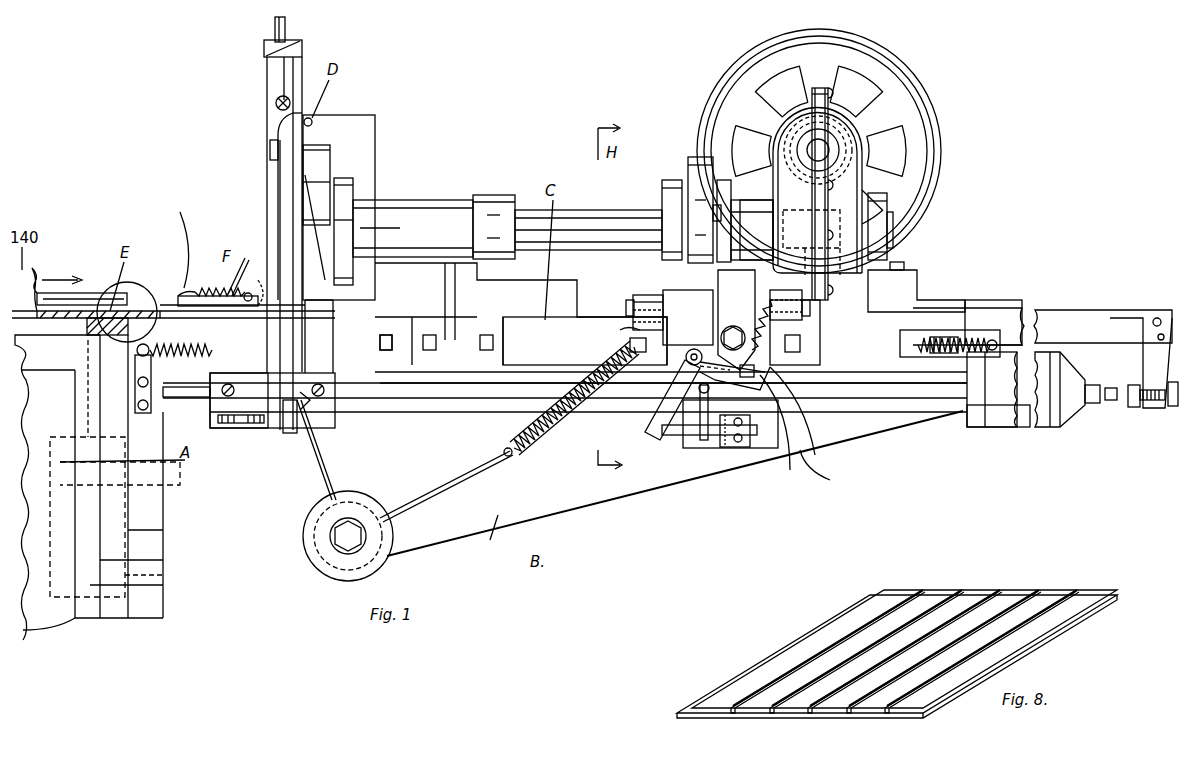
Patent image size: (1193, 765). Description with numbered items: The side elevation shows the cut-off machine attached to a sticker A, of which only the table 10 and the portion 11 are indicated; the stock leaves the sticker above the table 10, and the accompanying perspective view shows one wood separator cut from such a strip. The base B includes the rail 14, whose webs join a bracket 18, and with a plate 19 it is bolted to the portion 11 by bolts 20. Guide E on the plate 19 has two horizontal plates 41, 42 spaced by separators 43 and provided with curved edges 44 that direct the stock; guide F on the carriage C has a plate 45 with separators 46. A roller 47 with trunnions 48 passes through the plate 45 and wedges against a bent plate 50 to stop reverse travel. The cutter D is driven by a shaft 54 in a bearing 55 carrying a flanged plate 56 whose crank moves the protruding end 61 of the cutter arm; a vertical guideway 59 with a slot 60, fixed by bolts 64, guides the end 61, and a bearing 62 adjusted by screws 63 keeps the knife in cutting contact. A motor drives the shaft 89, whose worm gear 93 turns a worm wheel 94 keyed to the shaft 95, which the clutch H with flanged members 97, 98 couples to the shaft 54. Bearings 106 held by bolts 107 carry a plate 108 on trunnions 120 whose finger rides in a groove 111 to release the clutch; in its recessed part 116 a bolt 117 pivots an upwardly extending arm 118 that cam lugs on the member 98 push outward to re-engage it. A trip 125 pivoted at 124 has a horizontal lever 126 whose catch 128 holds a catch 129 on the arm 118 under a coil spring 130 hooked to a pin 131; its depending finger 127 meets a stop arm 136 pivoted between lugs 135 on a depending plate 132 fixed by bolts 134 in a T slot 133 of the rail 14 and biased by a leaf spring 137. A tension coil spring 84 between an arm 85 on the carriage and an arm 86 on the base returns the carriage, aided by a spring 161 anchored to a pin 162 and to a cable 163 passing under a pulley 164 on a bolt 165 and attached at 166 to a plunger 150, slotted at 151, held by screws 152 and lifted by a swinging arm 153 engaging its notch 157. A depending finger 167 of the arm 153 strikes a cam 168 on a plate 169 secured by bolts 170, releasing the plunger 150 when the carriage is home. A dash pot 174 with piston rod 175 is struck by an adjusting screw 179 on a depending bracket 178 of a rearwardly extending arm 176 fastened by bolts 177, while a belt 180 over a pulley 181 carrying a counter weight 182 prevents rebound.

The table 10 is at (66, 360).
The portion of sticker 11 is at (92, 583).
The rail 14 is at (903, 415).
The bracket 18 is at (155, 533).
The plate 19 is at (115, 563).
The bolts 20 is at (183, 480).
The horizontal plate 41 is at (62, 320).
The horizontal plate 42 is at (78, 292).
The separators 43 is at (138, 296).
The curved edges 44 is at (54, 282).
The plate 45 is at (229, 272).
The separators 46 is at (228, 318).
The roller 47 is at (320, 302).
The trunnions 48 is at (300, 478).
The bent plate 50 is at (312, 285).
The shaft 54 is at (598, 225).
The bearing 55 is at (490, 200).
The flanged plate 56 is at (435, 215).
The vertical guideway 59 is at (358, 125).
The vertical slot 60 is at (318, 268).
The protruding end of arm 61 is at (322, 160).
The bearing 62 is at (312, 280).
The adjusting screws 63 is at (393, 175).
The bolts 64 is at (380, 345).
The tension coil spring 84 is at (178, 360).
The arm 85 is at (990, 340).
The arm 86 is at (745, 72).
The shaft 89 is at (826, 151).
The worm gear 93 is at (838, 128).
The worm wheel 94 is at (838, 200).
The shaft 95 is at (890, 228).
The flanged member 97 is at (675, 210).
The flanged member 98 is at (724, 180).
The bearings 106 is at (665, 300).
The bolts 107 is at (622, 333).
The plate 108 is at (650, 262).
The groove 111 is at (697, 180).
The recessed part 116 is at (900, 280).
The bolt 117 is at (733, 290).
The upwardly extending arm 118 is at (855, 262).
The trunnions 120 is at (625, 308).
The pivot 124 is at (692, 350).
The trip 125 is at (688, 317).
The horizontal lever 126 is at (752, 380).
The depending finger 127 is at (668, 400).
The catch 128 is at (793, 475).
The catch 129 is at (800, 430).
The coil spring 130 is at (802, 343).
The pin 131 is at (832, 474).
The depending plate 132 is at (690, 448).
The T slot 133 is at (942, 420).
The bolts 134 is at (700, 385).
The lugs 135 is at (706, 440).
The stop arm 136 is at (680, 435).
The leaf spring 137 is at (706, 450).
The plunger 150 is at (264, 57).
The slot 151 is at (282, 57).
The screws 152 is at (276, 104).
The swinging arm 153 is at (283, 190).
The notch 157 is at (385, 400).
The tension coil spring 161 is at (510, 437).
The pin 162 is at (625, 340).
The cable 163 is at (453, 488).
The pulley 164 is at (312, 522).
The bolt 165 is at (340, 538).
The attachment point 166 is at (305, 400).
The depending finger 167 is at (322, 450).
The cam 168 is at (232, 423).
The plate 169 is at (305, 405).
The bolts 170 is at (225, 395).
The dash pot 174 is at (1012, 430).
The piston rod 175 is at (1092, 405).
The rearwardly extending arm 176 is at (1010, 307).
The bolts 177 is at (945, 300).
The depending bracket 178 is at (1152, 358).
The adjusting screw 179 is at (1135, 407).
The belt 180 is at (172, 236).
The pulley 181 is at (180, 300).
The counter weight 182 is at (190, 575).